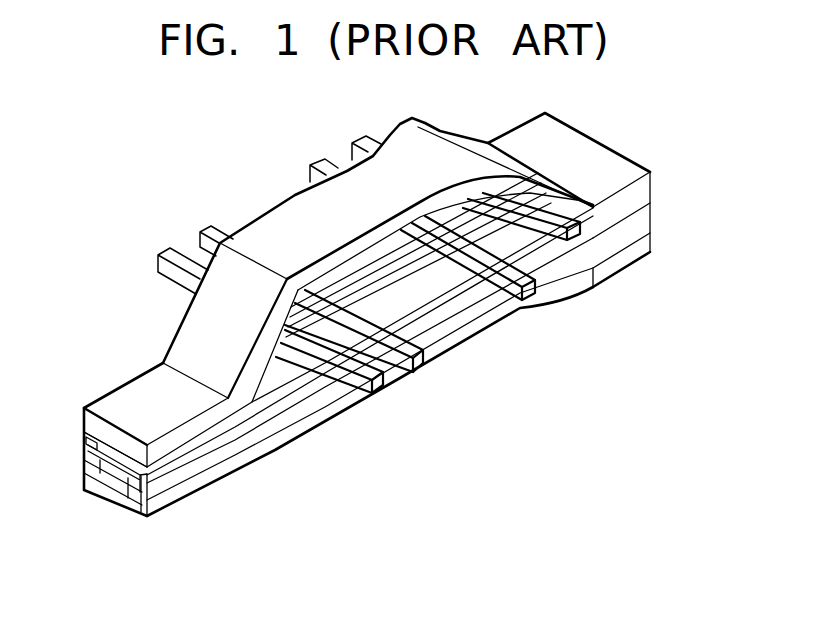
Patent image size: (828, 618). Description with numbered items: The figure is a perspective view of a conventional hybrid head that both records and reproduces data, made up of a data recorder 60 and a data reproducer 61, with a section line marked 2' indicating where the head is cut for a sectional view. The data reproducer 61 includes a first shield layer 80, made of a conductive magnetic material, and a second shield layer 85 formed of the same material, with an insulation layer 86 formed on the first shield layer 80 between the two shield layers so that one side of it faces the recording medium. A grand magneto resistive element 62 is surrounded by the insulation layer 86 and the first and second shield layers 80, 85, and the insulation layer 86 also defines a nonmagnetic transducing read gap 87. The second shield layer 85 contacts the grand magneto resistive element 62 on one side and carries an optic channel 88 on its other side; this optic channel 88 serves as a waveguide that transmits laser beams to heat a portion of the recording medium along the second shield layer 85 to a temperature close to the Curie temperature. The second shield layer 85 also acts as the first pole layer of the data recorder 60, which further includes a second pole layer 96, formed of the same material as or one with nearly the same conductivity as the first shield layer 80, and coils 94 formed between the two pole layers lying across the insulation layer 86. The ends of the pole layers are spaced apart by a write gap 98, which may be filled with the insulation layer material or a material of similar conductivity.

The section line 2- 2' is at (585, 193).
The data recorder 60 is at (172, 333).
The data reproducer 61 is at (124, 515).
The grand magneto resistive element 62 is at (118, 478).
The first shield layer 80 is at (253, 450).
The second shield layer 85 is at (90, 443).
The insulation layer 86 is at (178, 477).
The nonmagnetic transducing read gap 87 is at (143, 494).
The optic channel 88 is at (117, 447).
The coils 94 is at (320, 165).
The second pole layer 96 is at (140, 400).
The write gap 98 is at (117, 453).